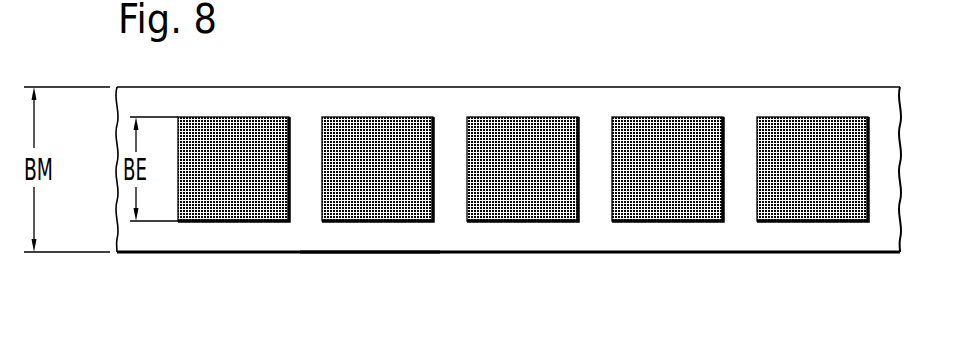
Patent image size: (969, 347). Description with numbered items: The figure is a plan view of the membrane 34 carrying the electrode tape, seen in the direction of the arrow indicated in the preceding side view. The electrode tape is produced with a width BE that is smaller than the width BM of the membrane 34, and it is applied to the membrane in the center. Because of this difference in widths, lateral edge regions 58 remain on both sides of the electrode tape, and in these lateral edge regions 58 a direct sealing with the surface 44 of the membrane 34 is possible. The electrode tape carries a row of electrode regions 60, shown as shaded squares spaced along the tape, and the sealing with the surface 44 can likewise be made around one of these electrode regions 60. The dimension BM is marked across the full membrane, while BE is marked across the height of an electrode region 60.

The membrane 34 is at (157, 257).
The electrode region 60 is at (372, 138).
The lateral edge region 58 is at (300, 226).
The surface of the membrane 44 is at (370, 241).